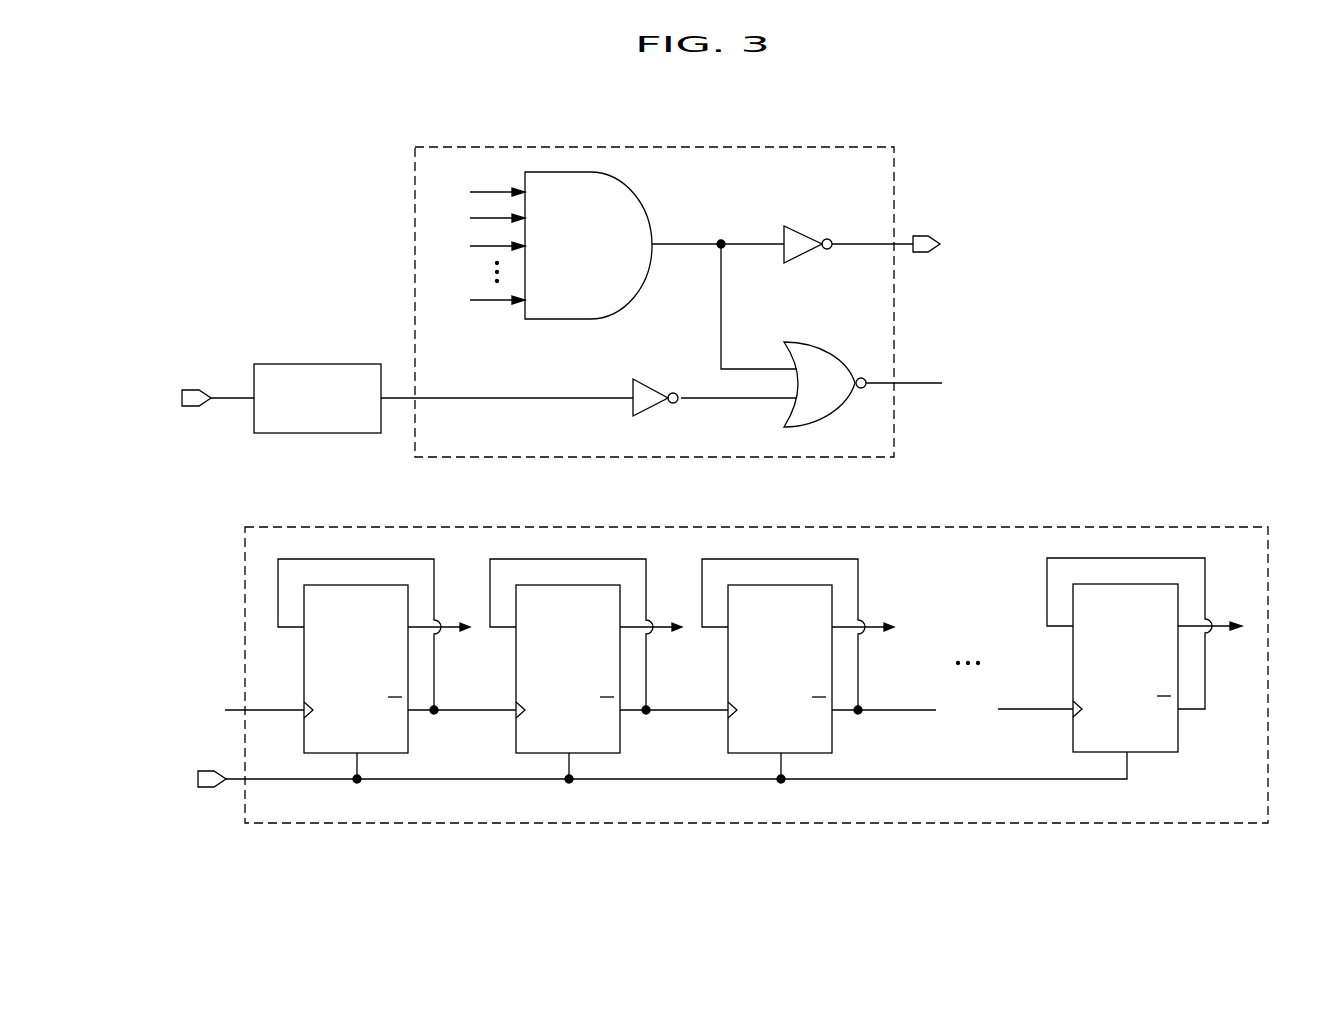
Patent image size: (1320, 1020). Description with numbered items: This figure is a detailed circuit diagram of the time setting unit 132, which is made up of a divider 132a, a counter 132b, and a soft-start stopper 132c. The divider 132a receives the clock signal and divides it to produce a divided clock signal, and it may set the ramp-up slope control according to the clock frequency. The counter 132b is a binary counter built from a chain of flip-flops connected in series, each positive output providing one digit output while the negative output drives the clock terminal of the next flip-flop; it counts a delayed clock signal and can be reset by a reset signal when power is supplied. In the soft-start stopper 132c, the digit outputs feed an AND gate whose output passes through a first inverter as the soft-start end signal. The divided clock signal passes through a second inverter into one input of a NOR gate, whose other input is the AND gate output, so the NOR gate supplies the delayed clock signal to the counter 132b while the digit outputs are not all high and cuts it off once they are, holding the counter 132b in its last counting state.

The time setting unit 132 is at (720, 120).
The divider 132a is at (315, 364).
The counter 132b is at (1099, 527).
The soft-start stopper 132c is at (415, 262).